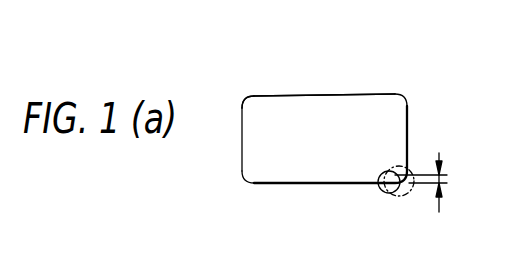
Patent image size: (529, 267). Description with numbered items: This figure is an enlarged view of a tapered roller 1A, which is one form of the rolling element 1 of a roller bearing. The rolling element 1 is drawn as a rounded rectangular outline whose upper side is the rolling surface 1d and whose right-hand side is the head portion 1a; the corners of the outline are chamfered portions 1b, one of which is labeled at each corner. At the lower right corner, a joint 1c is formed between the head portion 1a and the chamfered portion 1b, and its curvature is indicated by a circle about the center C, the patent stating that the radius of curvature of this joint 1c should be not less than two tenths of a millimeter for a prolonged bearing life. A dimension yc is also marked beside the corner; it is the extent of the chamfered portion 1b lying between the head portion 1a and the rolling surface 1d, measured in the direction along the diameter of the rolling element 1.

The rolling element 1 is at (299, 142).
The tapered roller 1A is at (392, 62).
The head portion 1a is at (408, 130).
The chamfered portion 1b is at (243, 97).
The joint 1c is at (386, 171).
The rolling surface 1d is at (341, 95).
The center of corner arc C is at (399, 201).
The dimension of the chamfered portion yc is at (431, 182).